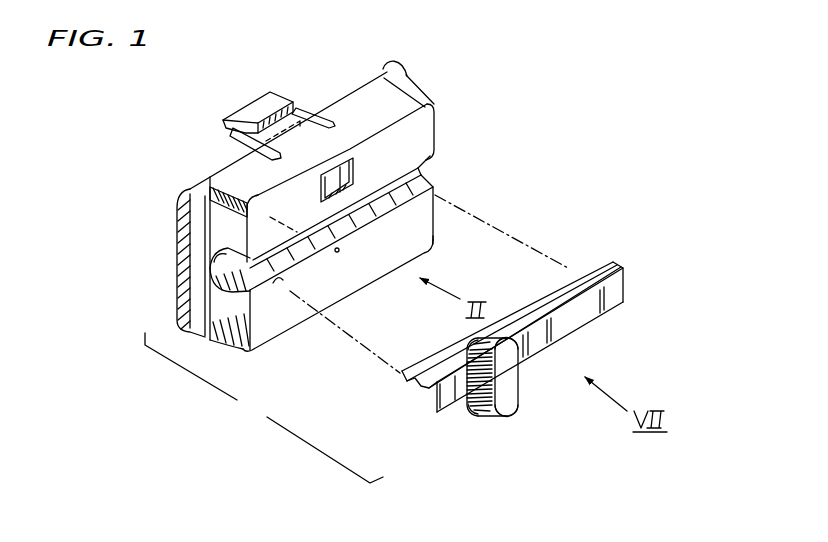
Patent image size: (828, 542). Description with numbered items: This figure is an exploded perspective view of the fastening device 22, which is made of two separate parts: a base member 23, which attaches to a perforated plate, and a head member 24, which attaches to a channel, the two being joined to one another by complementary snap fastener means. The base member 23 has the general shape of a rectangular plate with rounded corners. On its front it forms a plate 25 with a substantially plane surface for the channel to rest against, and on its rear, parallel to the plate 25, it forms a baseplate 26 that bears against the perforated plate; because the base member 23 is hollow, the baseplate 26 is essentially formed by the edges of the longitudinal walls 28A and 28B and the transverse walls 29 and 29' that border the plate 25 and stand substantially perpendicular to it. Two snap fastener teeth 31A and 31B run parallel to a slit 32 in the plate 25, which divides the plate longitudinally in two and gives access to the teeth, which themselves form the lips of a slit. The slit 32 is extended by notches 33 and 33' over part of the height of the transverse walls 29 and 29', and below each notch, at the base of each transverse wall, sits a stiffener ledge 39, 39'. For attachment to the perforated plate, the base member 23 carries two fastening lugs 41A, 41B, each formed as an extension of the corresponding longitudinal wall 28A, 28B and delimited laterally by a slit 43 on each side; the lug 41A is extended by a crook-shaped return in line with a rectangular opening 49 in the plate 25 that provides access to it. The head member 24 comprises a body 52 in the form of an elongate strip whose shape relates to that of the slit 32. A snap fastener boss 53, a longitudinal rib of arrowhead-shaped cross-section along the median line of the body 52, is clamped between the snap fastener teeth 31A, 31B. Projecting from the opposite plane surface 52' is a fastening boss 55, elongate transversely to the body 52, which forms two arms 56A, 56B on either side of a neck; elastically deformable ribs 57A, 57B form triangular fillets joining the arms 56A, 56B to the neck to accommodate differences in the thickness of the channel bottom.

The fastening device 22 is at (264, 408).
The base member 23 is at (427, 81).
The head member 24 is at (631, 270).
The plate 25 is at (307, 214).
The baseplate 26 is at (177, 270).
The longitudinal wall 28A is at (362, 92).
The longitudinal wall 28B is at (401, 272).
The transverse wall 29 is at (231, 346).
The transverse wall 29' is at (456, 233).
The snap fastener tooth 31A is at (419, 170).
The snap fastener tooth 31B is at (414, 184).
The slit 32 is at (370, 197).
The notch 33 is at (230, 249).
The notch 33' is at (448, 124).
The stiffener ledge 39 is at (176, 252).
The stiffener ledge 39' is at (398, 53).
The fastening lug 41A is at (240, 103).
The fastening lug 41B is at (265, 211).
The slit 43 is at (313, 108).
The rectangular opening 49 is at (336, 172).
The body 52 is at (407, 413).
The plane surface 52' is at (522, 347).
The snap fastener boss 53 is at (402, 389).
The fastening boss 55 is at (524, 373).
The arm 56A is at (507, 337).
The arm 56B is at (503, 412).
The rib 57A is at (479, 353).
The rib 57B is at (474, 394).